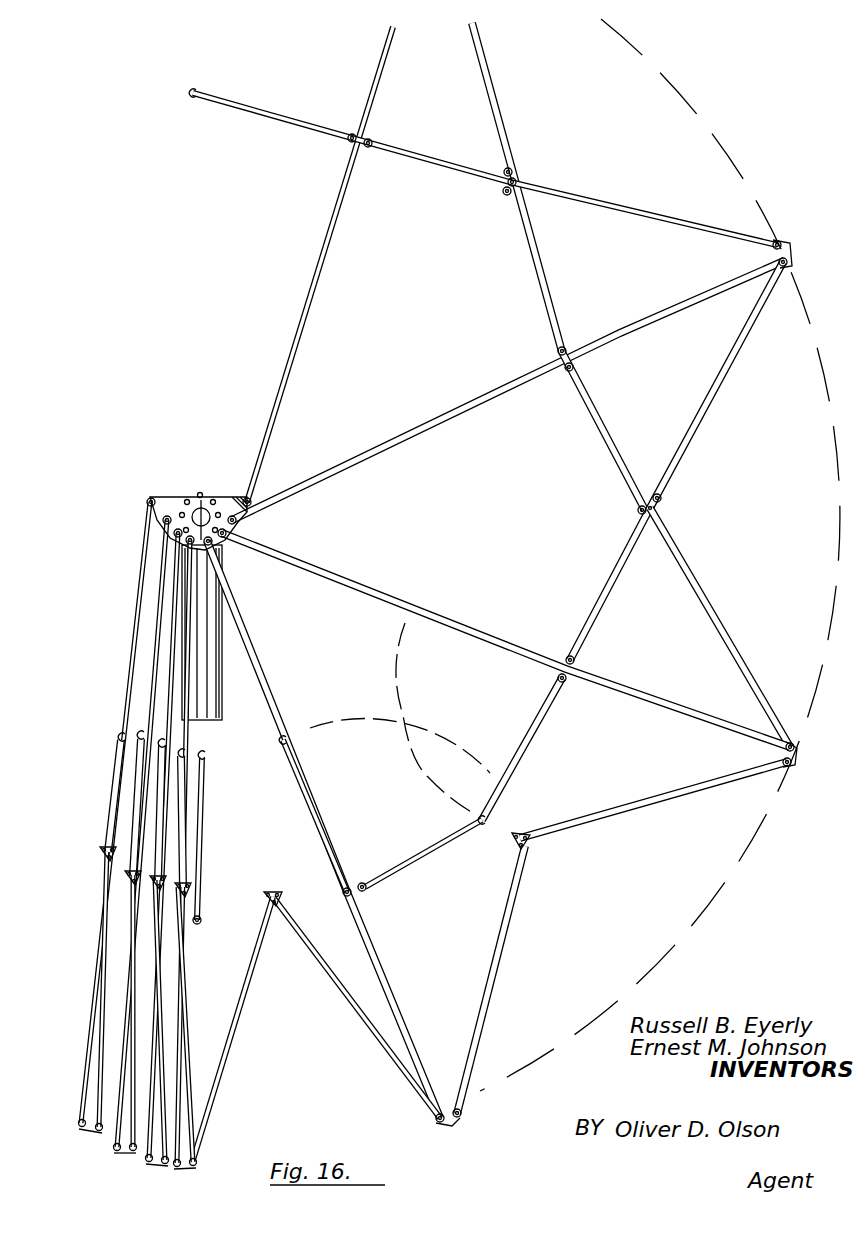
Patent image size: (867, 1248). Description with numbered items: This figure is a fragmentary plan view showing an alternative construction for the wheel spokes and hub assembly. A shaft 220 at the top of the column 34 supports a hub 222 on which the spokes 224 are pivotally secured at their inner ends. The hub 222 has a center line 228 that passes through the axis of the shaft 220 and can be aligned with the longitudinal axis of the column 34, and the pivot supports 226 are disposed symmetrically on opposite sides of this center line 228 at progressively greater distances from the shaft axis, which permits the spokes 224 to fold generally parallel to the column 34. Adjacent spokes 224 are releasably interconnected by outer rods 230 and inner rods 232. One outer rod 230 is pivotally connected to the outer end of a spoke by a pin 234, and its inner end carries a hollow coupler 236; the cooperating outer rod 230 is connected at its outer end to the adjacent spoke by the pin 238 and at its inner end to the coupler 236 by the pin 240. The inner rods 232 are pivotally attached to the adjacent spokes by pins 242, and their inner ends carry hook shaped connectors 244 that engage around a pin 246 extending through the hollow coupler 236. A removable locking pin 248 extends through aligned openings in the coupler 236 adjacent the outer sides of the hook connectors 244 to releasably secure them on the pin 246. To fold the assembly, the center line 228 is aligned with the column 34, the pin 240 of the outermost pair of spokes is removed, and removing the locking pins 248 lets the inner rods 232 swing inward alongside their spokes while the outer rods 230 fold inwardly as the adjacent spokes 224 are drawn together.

The column 34 is at (221, 706).
The shaft 220 is at (200, 511).
The hub 222 is at (209, 497).
The spokes 224 is at (279, 410).
The pivot supports 226 is at (187, 540).
The center line 228 is at (183, 503).
The outer rods 230 is at (104, 974).
The inner rods 232 is at (118, 788).
The pin 234 is at (197, 1159).
The hollow coupler 236 is at (104, 854).
The pin 238 is at (436, 1119).
The pin 240 is at (118, 737).
The pins 242 is at (200, 923).
The hook shaped connectors 244 is at (281, 742).
The pin 246 is at (263, 899).
The removable locking pin 248 is at (504, 190).